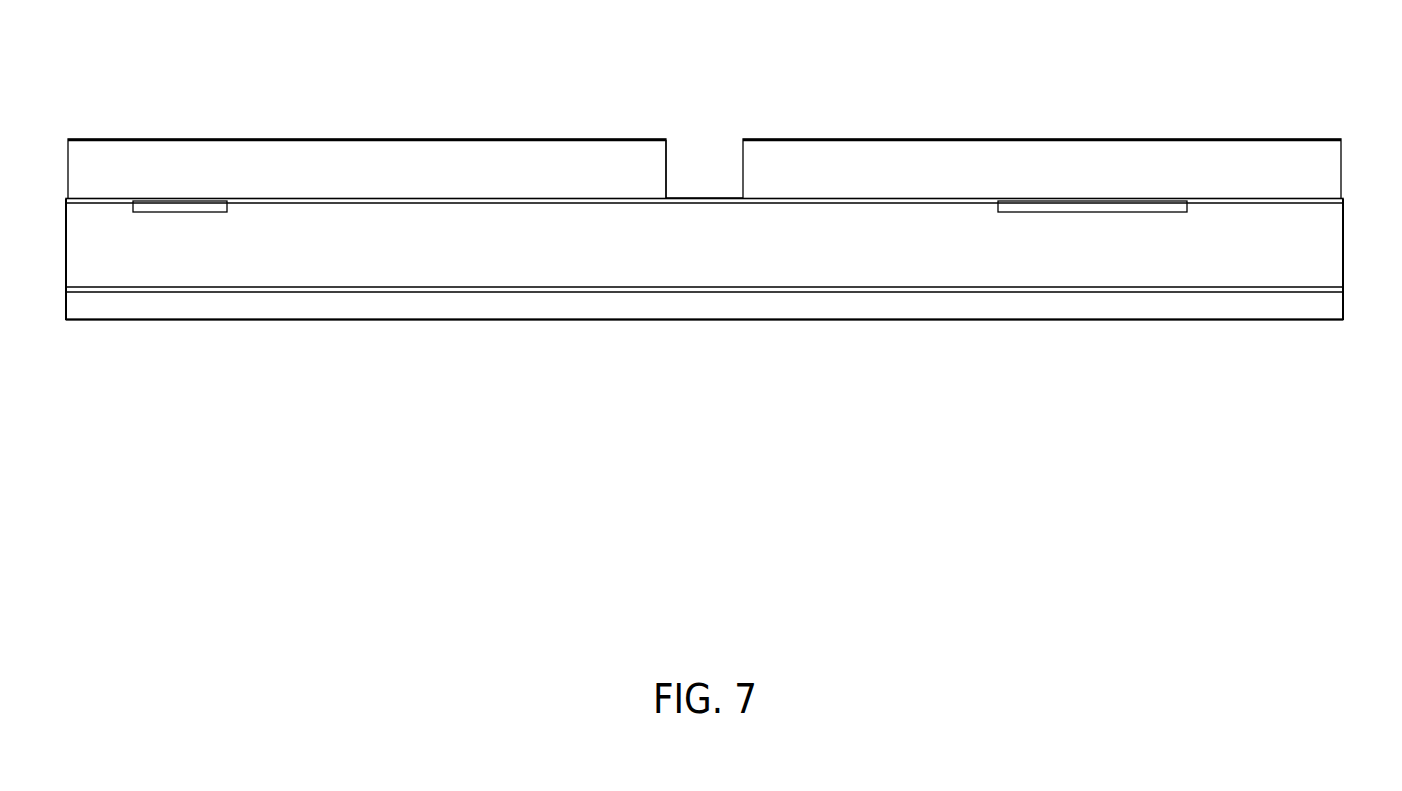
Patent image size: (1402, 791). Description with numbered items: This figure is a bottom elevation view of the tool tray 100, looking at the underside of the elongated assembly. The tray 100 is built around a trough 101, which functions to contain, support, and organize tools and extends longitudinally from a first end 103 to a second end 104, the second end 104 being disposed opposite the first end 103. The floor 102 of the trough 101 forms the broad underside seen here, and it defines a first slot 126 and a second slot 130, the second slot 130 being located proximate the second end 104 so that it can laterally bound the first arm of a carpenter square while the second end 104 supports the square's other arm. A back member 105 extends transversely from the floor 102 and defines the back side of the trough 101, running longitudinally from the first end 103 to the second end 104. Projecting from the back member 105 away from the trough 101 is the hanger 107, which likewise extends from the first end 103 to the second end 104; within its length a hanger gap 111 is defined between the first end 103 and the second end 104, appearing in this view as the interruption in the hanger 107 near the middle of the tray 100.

The tray 100 is at (456, 74).
The trough 101 is at (854, 275).
The floor 102 is at (605, 235).
The first end 103 is at (1345, 258).
The second end 104 is at (65, 253).
The back member 105 is at (705, 197).
The hanger 107 is at (1000, 136).
The hanger gap 111 is at (666, 160).
The first slot 126 is at (1095, 214).
The second slot 130 is at (178, 214).